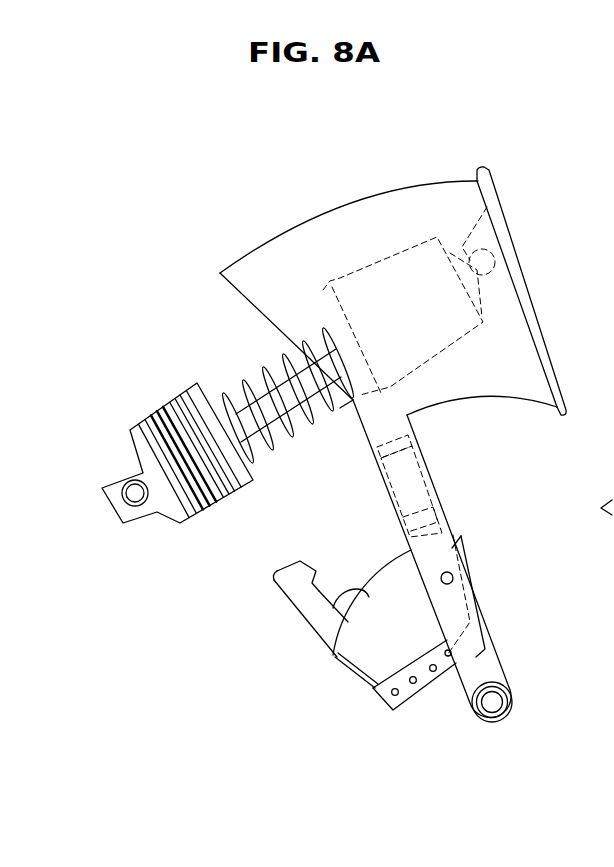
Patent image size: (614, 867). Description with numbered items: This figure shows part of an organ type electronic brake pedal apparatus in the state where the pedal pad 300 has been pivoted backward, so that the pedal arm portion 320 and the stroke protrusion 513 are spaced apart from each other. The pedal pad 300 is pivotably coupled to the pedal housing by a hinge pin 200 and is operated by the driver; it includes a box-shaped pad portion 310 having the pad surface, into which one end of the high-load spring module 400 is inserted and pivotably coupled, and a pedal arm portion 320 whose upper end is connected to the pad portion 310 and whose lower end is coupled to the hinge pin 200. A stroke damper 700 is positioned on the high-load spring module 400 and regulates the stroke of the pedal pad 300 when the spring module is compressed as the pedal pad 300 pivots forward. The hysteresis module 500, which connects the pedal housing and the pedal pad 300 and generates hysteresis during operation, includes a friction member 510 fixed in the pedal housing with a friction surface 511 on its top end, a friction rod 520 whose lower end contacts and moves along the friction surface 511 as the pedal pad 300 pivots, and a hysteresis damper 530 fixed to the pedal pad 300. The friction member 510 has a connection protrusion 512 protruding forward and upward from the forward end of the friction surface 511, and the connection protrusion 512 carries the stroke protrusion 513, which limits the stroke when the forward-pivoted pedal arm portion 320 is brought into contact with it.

The hinge pin 200 is at (492, 703).
The pedal pad 300 is at (452, 165).
The pad portion 310 is at (393, 190).
The pedal arm portion 320 is at (486, 651).
The high-load spring module 400 is at (234, 368).
The hysteresis module 500 is at (332, 656).
The friction member 510 is at (373, 657).
The friction surface 511 is at (342, 593).
The connection protrusion 512 is at (308, 607).
The stroke protrusion 513 is at (303, 577).
The friction rod 520 is at (430, 495).
The hysteresis damper 530 is at (408, 442).
The stroke damper 700 is at (150, 425).